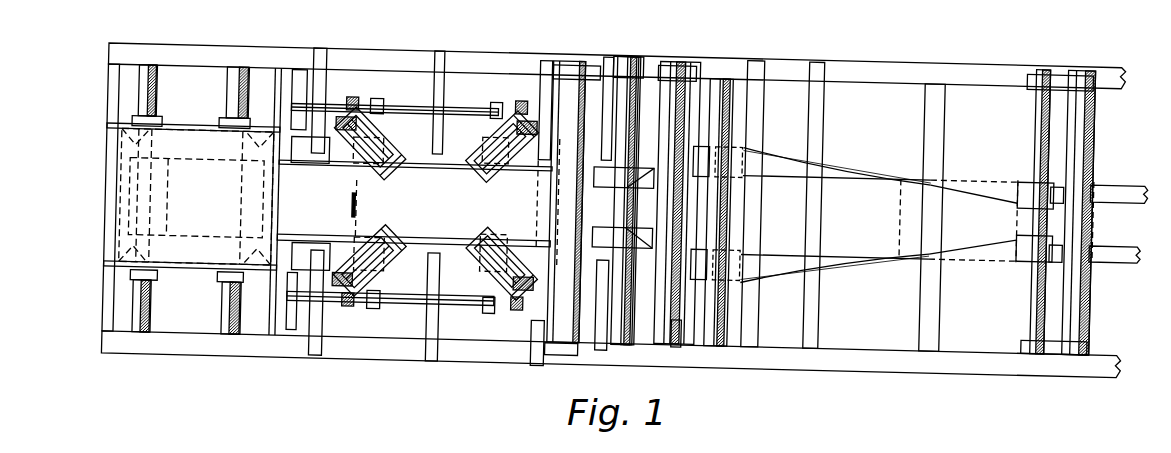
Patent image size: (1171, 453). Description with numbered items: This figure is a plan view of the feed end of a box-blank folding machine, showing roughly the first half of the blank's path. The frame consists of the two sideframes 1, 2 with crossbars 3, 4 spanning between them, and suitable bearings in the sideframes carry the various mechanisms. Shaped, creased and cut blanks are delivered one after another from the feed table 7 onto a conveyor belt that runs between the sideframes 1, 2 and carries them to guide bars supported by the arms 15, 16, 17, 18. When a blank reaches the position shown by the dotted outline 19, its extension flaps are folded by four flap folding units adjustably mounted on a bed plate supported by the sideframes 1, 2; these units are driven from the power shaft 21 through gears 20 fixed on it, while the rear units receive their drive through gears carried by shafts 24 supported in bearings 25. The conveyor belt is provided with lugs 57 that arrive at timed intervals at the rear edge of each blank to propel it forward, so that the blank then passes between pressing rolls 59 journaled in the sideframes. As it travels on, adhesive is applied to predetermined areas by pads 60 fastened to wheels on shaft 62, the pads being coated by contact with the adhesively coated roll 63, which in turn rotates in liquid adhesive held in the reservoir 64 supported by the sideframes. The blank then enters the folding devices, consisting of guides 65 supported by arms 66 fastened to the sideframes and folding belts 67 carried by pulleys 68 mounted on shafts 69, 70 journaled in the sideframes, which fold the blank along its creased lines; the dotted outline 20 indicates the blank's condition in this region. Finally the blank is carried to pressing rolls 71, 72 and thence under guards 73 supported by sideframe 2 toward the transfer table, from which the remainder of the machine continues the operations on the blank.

The sideframe 1 is at (529, 43).
The sideframe 2 is at (477, 349).
The crossbar 3 is at (109, 92).
The crossbar 4 is at (937, 88).
The feed table 7 is at (206, 271).
The arm 15 is at (330, 32).
The arm 16 is at (440, 44).
The arm 17 is at (540, 343).
The arm 18 is at (610, 71).
The blank position 19 is at (445, 206).
The blank position 20 is at (741, 213).
The power shaft 21 is at (541, 82).
The shaft 24 is at (425, 98).
The bearing 25 is at (296, 72).
The lug 57 is at (356, 200).
The pressing roll 59 is at (588, 81).
The pad 60 is at (622, 218).
The shaft 62 is at (641, 80).
The adhesively coated roll 63 is at (696, 89).
The reservoir 64 is at (691, 336).
The guide 65 is at (783, 154).
The arm 66 is at (810, 290).
The folding belt 67 is at (909, 182).
The pulley 68 is at (1022, 226).
The shaft 69 is at (731, 331).
The shaft 70 is at (1042, 282).
The pressing roll 71 is at (1093, 305).
The pressing roll 72 is at (1097, 159).
The guard 73 is at (1116, 236).